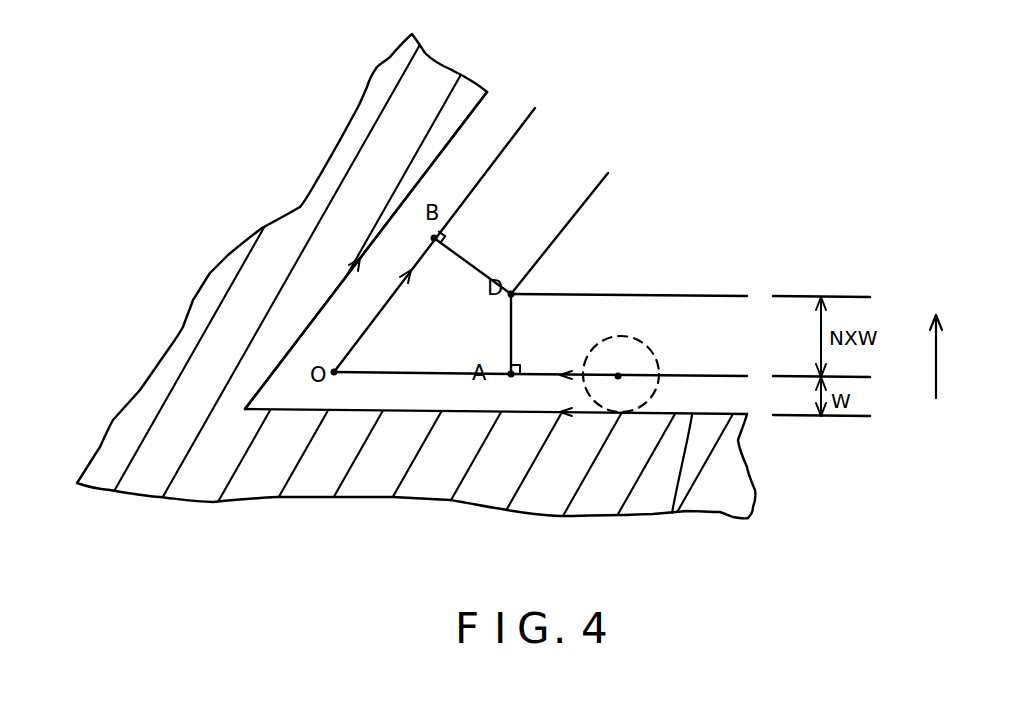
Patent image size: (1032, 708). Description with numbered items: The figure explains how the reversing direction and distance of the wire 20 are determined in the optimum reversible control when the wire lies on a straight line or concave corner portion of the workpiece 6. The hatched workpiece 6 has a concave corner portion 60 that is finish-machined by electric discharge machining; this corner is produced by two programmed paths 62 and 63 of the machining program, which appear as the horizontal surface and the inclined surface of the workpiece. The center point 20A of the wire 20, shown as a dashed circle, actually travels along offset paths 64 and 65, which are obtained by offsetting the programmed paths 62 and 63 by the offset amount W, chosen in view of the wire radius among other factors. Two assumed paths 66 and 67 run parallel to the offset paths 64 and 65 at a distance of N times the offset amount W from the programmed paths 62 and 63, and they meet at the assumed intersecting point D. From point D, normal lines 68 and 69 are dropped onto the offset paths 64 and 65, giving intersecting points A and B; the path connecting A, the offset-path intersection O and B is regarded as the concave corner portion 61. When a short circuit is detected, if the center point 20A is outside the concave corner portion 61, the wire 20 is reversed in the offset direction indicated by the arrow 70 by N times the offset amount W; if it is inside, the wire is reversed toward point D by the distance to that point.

The workpiece 6 is at (755, 492).
The wire 20 is at (632, 319).
The center point of the wire 20A is at (618, 376).
The concave corner portion 60 is at (457, 413).
The concave corner portion 61 is at (383, 372).
The programmed path 62 is at (672, 513).
The programmed path 63 is at (347, 282).
The offset path 64 is at (717, 374).
The offset path 65 is at (513, 138).
The assumed path 66 is at (672, 296).
The assumed path 67 is at (593, 197).
The normal line 68 is at (512, 328).
The normal line 69 is at (463, 257).
The arrow 70 is at (940, 350).